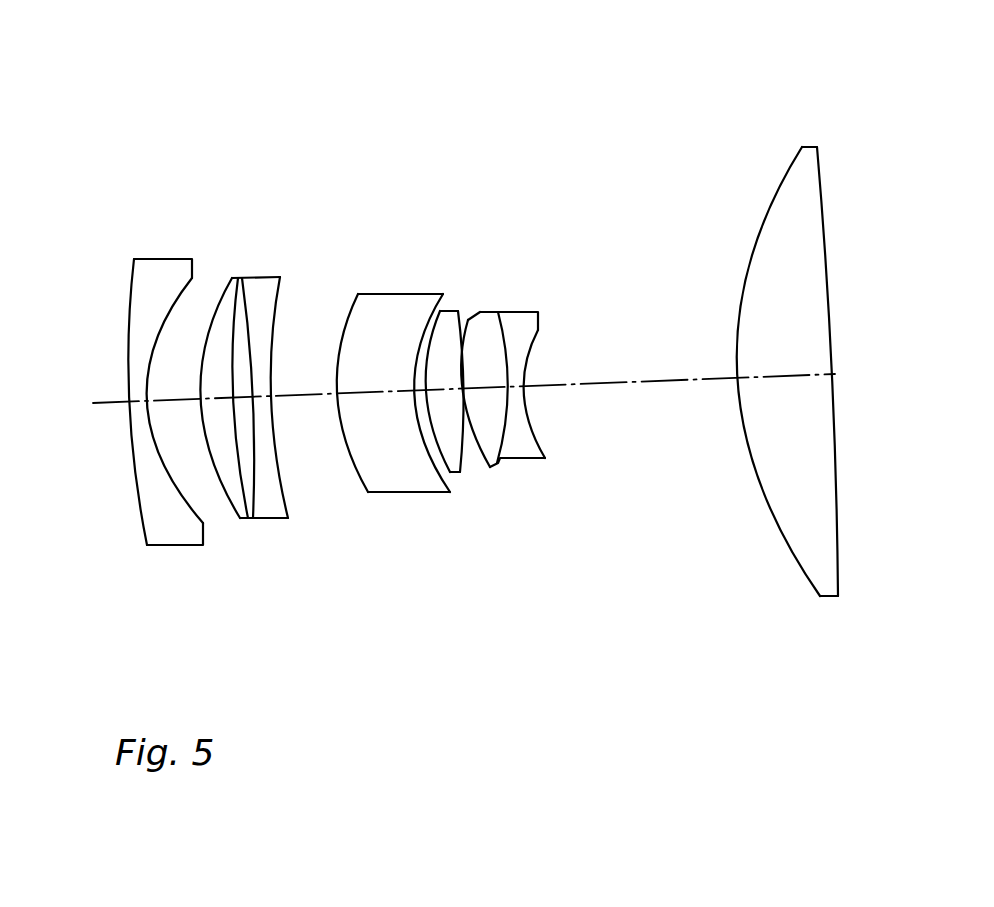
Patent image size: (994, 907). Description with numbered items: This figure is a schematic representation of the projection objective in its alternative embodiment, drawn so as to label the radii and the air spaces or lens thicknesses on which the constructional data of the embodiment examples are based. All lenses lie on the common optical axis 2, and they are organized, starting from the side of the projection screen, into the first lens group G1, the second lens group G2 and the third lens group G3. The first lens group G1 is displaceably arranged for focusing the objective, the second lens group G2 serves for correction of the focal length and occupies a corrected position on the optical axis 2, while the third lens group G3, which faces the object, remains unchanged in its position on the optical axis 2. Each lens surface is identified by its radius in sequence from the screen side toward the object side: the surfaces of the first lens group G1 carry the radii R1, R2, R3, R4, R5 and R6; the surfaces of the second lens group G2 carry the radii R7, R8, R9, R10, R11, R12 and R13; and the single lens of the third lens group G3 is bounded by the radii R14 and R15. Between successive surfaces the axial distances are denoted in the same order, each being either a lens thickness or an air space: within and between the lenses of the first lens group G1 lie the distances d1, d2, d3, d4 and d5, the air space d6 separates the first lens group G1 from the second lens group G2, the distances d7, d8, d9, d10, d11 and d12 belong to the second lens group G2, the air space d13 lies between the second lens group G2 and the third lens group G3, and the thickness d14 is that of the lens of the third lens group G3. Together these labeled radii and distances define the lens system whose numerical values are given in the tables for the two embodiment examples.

The first lens group G1 is at (202, 335).
The second lens group G2 is at (489, 327).
The third lens group G3 is at (797, 316).
The optical axis 2 is at (837, 374).
The radius R1 is at (132, 279).
The radius R2 is at (178, 294).
The radius R3 is at (226, 288).
The radius R4 is at (247, 297).
The radius R5 is at (253, 284).
The radius R6 is at (272, 300).
The radius R7 is at (353, 303).
The radius R8 is at (438, 330).
The radius R9 is at (457, 310).
The radius R10 is at (462, 377).
The radius R11 is at (485, 317).
The radius R12 is at (505, 340).
The radius R13 is at (537, 333).
The radius R14 is at (778, 186).
The radius R15 is at (825, 186).
The lens thickness d1 is at (137, 404).
The air space d2 is at (180, 405).
The lens thickness d3 is at (216, 404).
The air space d4 is at (255, 404).
The lens thickness d5 is at (266, 404).
The air space d6 is at (297, 400).
The lens thickness d7 is at (390, 397).
The air space d8 is at (450, 393).
The lens thickness d9 is at (467, 430).
The air space d10 is at (487, 467).
The lens thickness d11 is at (490, 390).
The lens thickness d12 is at (518, 390).
The air space d13 is at (640, 382).
The lens thickness d14 is at (783, 378).